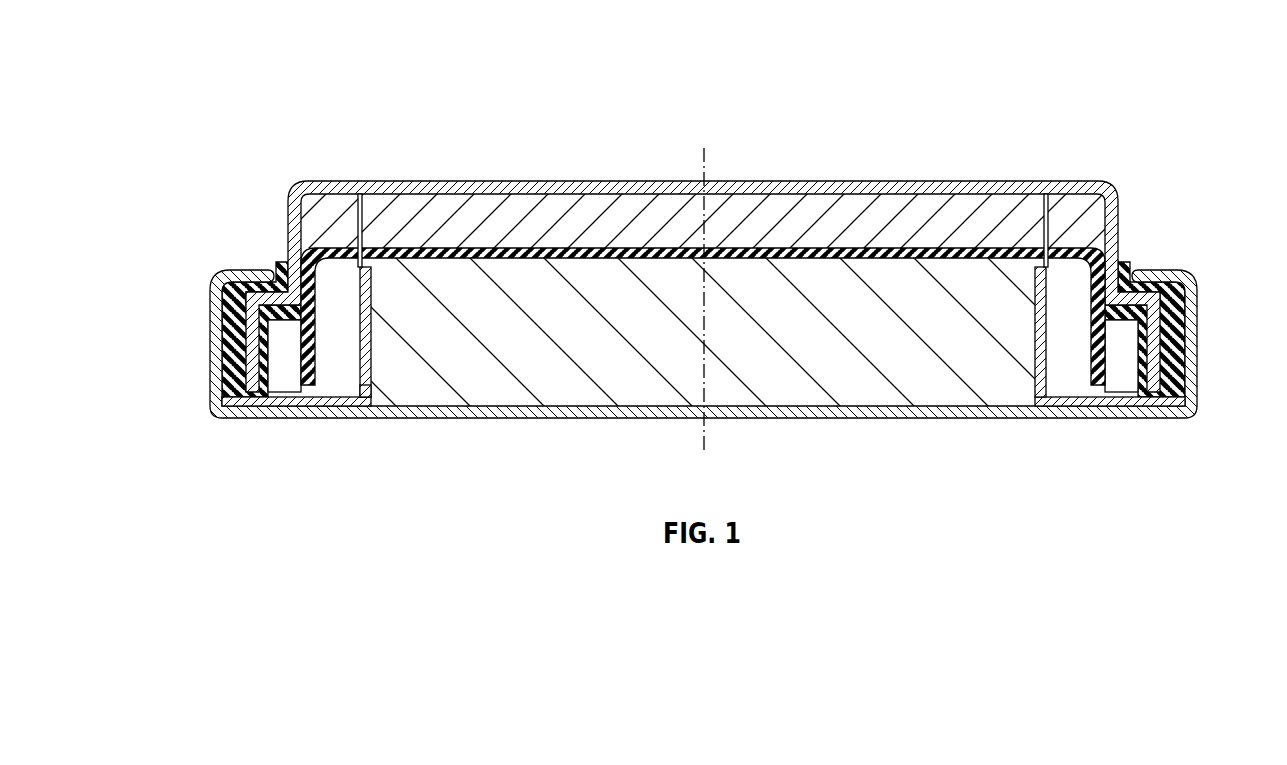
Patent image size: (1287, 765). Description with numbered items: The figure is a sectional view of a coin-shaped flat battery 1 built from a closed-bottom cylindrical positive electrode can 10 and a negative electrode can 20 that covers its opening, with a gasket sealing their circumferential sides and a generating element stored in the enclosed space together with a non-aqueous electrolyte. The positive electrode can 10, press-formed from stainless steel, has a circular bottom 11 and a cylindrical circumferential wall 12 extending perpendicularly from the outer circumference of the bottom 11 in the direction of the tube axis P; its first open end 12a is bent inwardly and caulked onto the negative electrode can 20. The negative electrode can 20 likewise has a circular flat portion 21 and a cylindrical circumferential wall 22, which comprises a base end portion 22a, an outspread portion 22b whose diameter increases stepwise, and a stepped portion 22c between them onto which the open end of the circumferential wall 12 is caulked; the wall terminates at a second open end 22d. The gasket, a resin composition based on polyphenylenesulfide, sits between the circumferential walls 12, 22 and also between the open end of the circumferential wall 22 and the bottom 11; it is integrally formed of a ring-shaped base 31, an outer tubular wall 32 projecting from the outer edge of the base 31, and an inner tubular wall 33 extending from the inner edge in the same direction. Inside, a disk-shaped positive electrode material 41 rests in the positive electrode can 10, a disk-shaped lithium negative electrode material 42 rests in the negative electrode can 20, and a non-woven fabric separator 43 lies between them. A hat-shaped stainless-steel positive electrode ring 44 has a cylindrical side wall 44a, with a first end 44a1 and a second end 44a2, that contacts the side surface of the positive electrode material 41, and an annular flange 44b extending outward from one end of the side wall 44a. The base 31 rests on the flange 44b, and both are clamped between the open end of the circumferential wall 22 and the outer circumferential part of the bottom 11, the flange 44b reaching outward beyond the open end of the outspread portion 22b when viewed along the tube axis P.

The flat battery 1 is at (702, 316).
The positive electrode can 10 is at (698, 335).
The bottom 11 is at (889, 407).
The circumferential wall 12 is at (698, 296).
The first open end 12a is at (1136, 268).
The negative electrode can 20 is at (651, 312).
The flat portion 21 is at (634, 194).
The circumferential wall 22 is at (651, 329).
The base end portion 22a is at (288, 222).
The outspread portion 22b is at (246, 324).
The stepped portion 22c is at (249, 267).
The second open end 22d is at (1120, 362).
The base 31 is at (1171, 402).
The outer tubular wall 32 is at (1195, 376).
The inner tubular wall 33 is at (1156, 398).
The positive electrode material 41 is at (781, 388).
The negative electrode material 42 is at (523, 214).
The separator 43 is at (782, 253).
The positive electrode ring 44 is at (651, 343).
The cylindrical side wall 44a is at (676, 343).
The first end 44a1 is at (372, 270).
The second end 44a2 is at (366, 406).
The flange 44b is at (285, 406).
The tube axis P is at (709, 151).